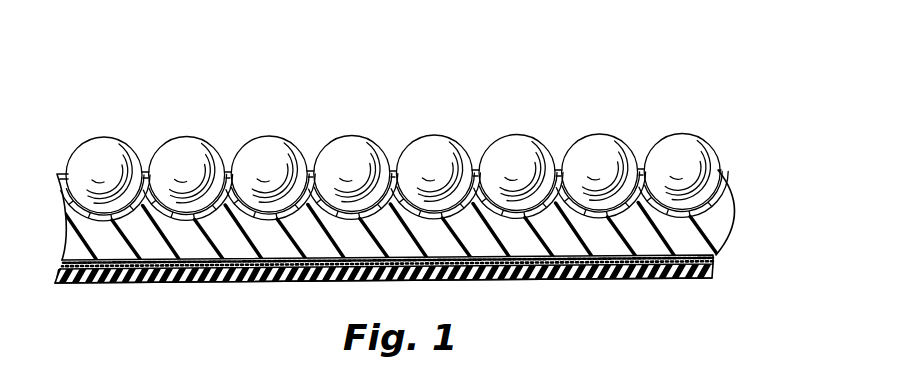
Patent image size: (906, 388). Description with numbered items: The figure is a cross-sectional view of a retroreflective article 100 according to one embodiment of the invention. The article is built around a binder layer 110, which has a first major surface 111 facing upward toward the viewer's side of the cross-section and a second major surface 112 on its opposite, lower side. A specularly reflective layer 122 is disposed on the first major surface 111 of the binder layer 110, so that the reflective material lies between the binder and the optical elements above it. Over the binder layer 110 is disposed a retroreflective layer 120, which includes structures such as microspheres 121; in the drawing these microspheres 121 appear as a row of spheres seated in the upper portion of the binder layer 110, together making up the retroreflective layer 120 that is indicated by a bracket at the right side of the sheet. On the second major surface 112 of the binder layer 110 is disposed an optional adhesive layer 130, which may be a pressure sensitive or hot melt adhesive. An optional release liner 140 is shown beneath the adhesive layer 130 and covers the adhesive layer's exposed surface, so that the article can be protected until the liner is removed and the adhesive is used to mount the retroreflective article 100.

The retroreflective article 100 is at (500, 68).
The binder layer 110 is at (428, 219).
The first major surface 111 is at (112, 186).
The second major surface 112 is at (100, 280).
The retroreflective layer 120 is at (437, 148).
The microspheres 121 is at (272, 157).
The specularly reflective layer 122 is at (288, 210).
The adhesive layer 130 is at (711, 262).
The release liner 140 is at (381, 301).